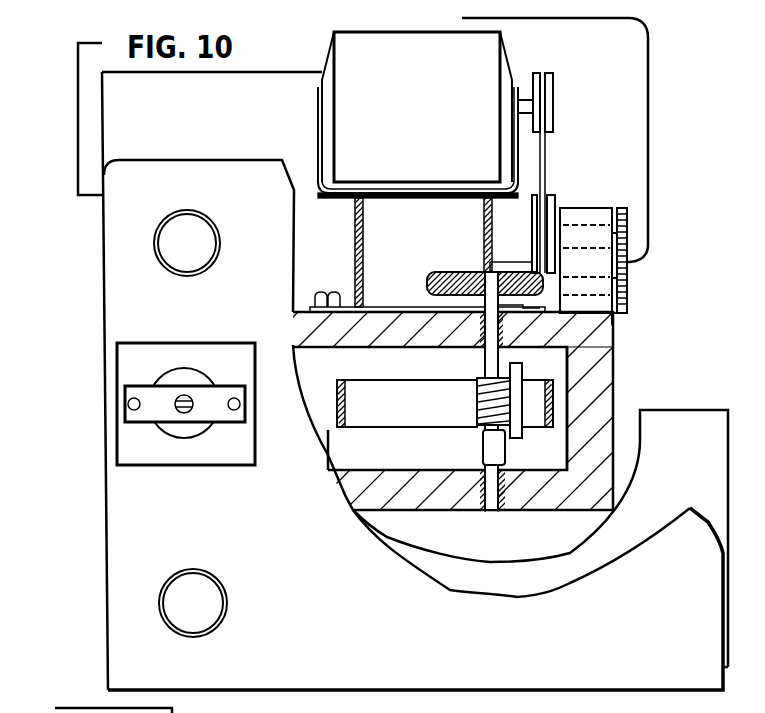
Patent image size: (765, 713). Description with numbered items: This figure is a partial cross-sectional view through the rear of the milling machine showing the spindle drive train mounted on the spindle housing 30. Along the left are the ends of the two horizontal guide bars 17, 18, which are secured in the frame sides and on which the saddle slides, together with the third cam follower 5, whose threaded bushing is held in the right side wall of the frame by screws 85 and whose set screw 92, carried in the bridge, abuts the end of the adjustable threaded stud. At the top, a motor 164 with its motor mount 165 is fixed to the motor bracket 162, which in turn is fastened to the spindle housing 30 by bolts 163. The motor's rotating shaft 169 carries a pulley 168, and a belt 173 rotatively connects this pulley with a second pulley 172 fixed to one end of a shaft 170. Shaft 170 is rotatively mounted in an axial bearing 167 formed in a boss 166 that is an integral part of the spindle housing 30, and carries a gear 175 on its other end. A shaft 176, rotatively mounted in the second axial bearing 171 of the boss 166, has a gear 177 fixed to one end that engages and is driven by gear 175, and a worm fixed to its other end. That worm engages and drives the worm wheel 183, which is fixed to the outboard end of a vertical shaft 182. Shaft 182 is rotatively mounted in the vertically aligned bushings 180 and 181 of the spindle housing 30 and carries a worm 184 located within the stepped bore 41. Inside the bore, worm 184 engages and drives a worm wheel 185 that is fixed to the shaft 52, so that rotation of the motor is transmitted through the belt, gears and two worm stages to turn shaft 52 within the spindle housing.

The third cam follower 5 is at (152, 472).
The horizontal guide bar 17 is at (206, 614).
The horizontal guide bar 18 is at (200, 254).
The spindle housing 30 is at (622, 350).
The stepped bore 41 is at (384, 461).
The shaft 52 is at (418, 408).
The screws 85 is at (230, 455).
The set screw 92 is at (180, 415).
The motor bracket 162 is at (432, 221).
The bolts 163 is at (326, 291).
The motor 164 is at (437, 143).
The motor mount 165 is at (318, 176).
The boss 166 is at (590, 210).
The axial bearing 167 is at (567, 226).
The pulley 168 is at (553, 88).
The rotating shaft 169 is at (525, 100).
The shaft 170 is at (627, 233).
The axial bearing 171 is at (613, 325).
The pulley 172 is at (533, 245).
The belt 173 is at (543, 158).
The gear 175 is at (627, 213).
The shaft 176 is at (613, 278).
The gear 177 is at (623, 313).
The bushing 180 is at (477, 315).
The bushing 181 is at (523, 512).
The shaft 182 is at (482, 350).
The worm wheel 183 is at (458, 258).
The worm 184 is at (477, 405).
The worm wheel 185 is at (508, 455).